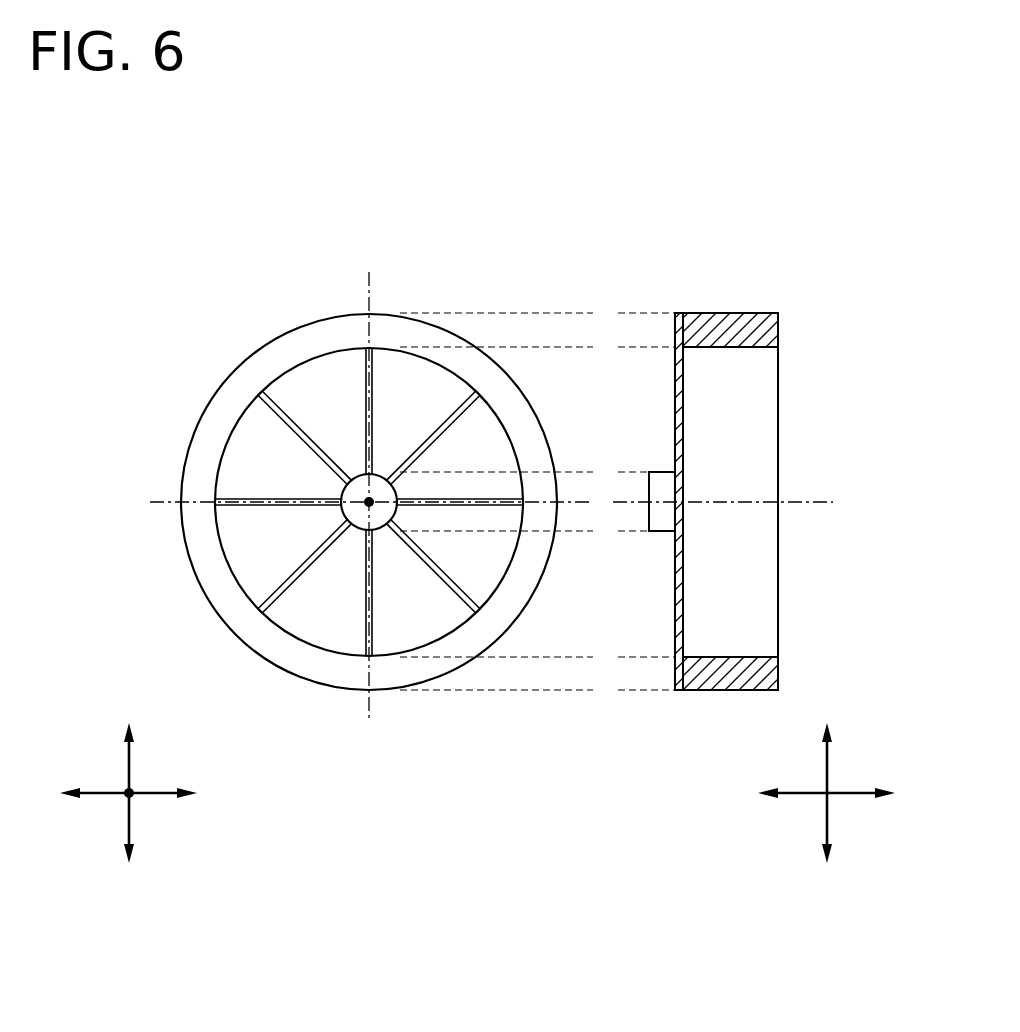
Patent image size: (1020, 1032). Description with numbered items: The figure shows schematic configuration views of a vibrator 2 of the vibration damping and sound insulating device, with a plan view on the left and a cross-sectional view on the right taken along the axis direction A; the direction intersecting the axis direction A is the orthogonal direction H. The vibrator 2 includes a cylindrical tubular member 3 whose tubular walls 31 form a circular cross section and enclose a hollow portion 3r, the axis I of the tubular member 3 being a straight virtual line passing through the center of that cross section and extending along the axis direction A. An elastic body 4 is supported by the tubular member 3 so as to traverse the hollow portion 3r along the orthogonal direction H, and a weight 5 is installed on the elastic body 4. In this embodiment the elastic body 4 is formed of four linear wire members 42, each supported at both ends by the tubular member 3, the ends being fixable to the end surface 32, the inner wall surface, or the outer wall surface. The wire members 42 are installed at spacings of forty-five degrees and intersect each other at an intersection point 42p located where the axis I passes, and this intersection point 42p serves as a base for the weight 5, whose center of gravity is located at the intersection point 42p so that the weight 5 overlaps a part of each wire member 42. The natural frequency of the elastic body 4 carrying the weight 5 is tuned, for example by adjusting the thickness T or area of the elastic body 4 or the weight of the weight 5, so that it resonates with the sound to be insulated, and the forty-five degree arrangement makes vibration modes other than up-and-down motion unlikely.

The vibrator 2 is at (157, 306).
The tubular member 3 is at (238, 360).
The tubular wall 31 is at (752, 313).
The end surface 32 is at (778, 330).
The hollow portion 3r is at (760, 555).
The elastic body 4 is at (675, 394).
The wire member 42 is at (364, 584).
The weight 5 is at (382, 531).
The intersection point 42p is at (372, 504).
The axis I is at (802, 502).
The thickness T is at (683, 307).
The orthogonal direction H is at (130, 760).
The axis direction A is at (133, 797).